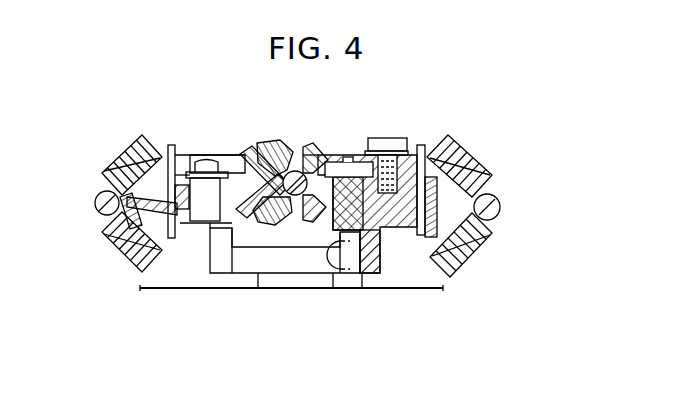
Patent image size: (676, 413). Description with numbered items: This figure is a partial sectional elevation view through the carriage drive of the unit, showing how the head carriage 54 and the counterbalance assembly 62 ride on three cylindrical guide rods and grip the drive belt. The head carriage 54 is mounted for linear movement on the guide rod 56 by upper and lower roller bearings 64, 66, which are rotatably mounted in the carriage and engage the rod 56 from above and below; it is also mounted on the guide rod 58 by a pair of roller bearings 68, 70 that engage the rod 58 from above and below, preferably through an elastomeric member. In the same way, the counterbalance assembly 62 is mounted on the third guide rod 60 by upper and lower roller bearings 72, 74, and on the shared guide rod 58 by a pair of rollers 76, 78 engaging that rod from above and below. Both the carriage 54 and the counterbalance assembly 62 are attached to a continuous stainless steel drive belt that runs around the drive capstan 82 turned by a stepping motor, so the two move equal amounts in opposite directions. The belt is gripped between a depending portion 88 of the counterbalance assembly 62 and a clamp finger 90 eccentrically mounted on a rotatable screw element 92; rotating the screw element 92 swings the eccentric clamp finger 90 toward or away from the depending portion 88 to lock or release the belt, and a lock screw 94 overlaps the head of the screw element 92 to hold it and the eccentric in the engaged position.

The head carriage 54 is at (178, 238).
The cylindrical guide rod 56 is at (95, 202).
The cylindrical guide rod 58 is at (295, 170).
The cylindrical guide rod 60 is at (502, 207).
The counterbalance assembly 62 is at (427, 158).
The upper roller bearing 64 is at (134, 148).
The lower roller bearing 66 is at (123, 258).
The roller bearing 68 is at (260, 137).
The roller bearing 70 is at (262, 225).
The upper roller bearing 72 is at (477, 157).
The lower roller bearing 74 is at (480, 247).
The roller 76 is at (350, 152).
The roller 78 is at (317, 195).
The drive capstan 82 is at (288, 268).
The depending portion 88 is at (380, 258).
The clamp finger 90 is at (345, 270).
The screw element 92 is at (364, 138).
The lock screw 94 is at (395, 140).